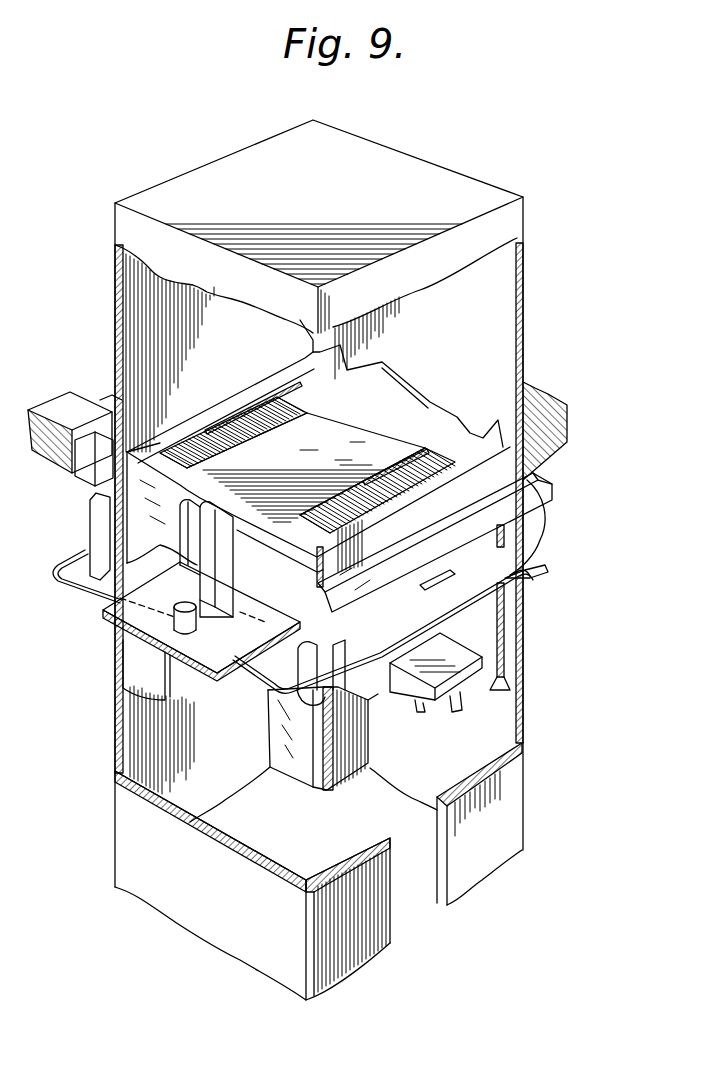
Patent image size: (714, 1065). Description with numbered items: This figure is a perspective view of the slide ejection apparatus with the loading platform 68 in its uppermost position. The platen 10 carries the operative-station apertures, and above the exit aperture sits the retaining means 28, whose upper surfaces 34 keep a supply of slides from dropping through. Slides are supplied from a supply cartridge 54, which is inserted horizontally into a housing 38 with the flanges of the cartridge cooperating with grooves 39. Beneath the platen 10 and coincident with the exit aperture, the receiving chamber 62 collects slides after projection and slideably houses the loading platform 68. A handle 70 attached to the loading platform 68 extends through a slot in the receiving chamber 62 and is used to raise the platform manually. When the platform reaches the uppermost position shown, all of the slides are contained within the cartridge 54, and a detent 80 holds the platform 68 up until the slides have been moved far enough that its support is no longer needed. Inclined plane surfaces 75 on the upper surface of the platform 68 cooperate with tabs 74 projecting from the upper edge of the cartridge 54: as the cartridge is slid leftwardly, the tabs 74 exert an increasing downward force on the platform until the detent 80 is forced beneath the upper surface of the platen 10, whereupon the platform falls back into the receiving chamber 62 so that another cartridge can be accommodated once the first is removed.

The platen 10 is at (105, 618).
The retaining means 28 is at (90, 493).
The upper surfaces 34 is at (543, 480).
The housing 38 is at (88, 377).
The grooves 39 is at (102, 437).
The supply cartridge 54 is at (525, 273).
The receiving chamber 62 is at (128, 820).
The loading platform 68 is at (356, 441).
The handle 70 is at (450, 647).
The tabs 74 is at (481, 417).
The inclined plane surfaces 75 is at (278, 402).
The detent 80 is at (213, 545).